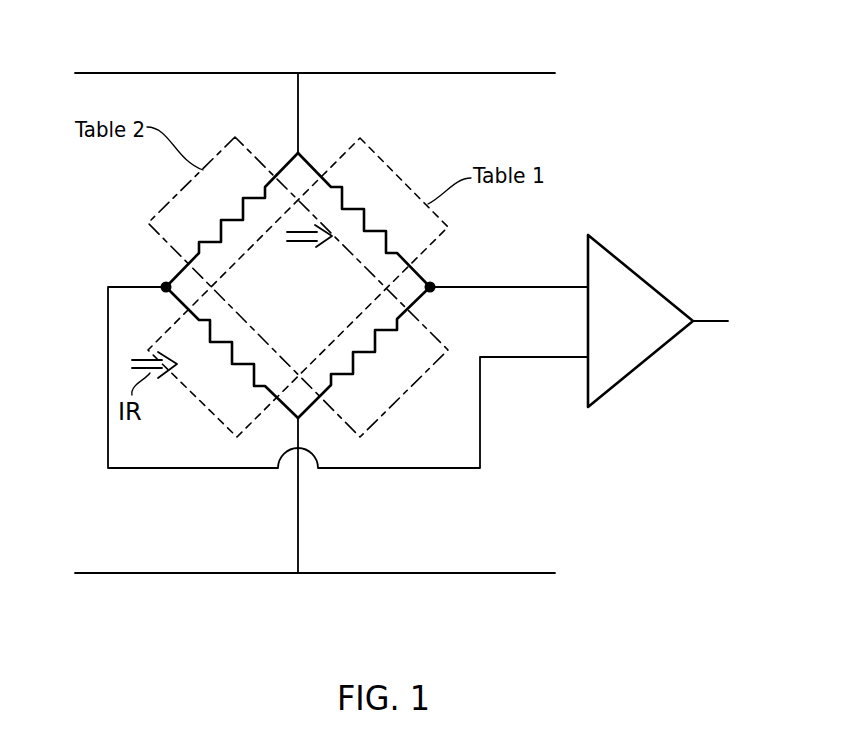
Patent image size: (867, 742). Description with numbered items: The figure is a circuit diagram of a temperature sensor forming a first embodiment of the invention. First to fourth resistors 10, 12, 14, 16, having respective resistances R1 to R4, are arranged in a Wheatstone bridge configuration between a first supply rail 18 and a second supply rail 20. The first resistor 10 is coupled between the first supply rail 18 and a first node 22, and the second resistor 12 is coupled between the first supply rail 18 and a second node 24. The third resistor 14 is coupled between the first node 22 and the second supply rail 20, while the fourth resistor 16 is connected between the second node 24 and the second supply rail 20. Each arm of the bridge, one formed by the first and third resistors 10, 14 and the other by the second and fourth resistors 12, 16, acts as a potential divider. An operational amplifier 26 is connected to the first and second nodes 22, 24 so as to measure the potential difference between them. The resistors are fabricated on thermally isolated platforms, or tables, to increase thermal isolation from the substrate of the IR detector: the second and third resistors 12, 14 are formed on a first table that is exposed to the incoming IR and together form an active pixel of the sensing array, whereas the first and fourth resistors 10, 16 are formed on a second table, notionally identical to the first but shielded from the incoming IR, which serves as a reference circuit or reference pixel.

The first resistor 10 is at (216, 217).
The second resistor 12 is at (366, 203).
The third resistor 14 is at (227, 367).
The fourth resistor 16 is at (380, 363).
The first supply rail 18 is at (403, 73).
The second supply rail 20 is at (255, 573).
The first node 22 is at (161, 283).
The second node 24 is at (437, 282).
The operational amplifier 26 is at (627, 262).